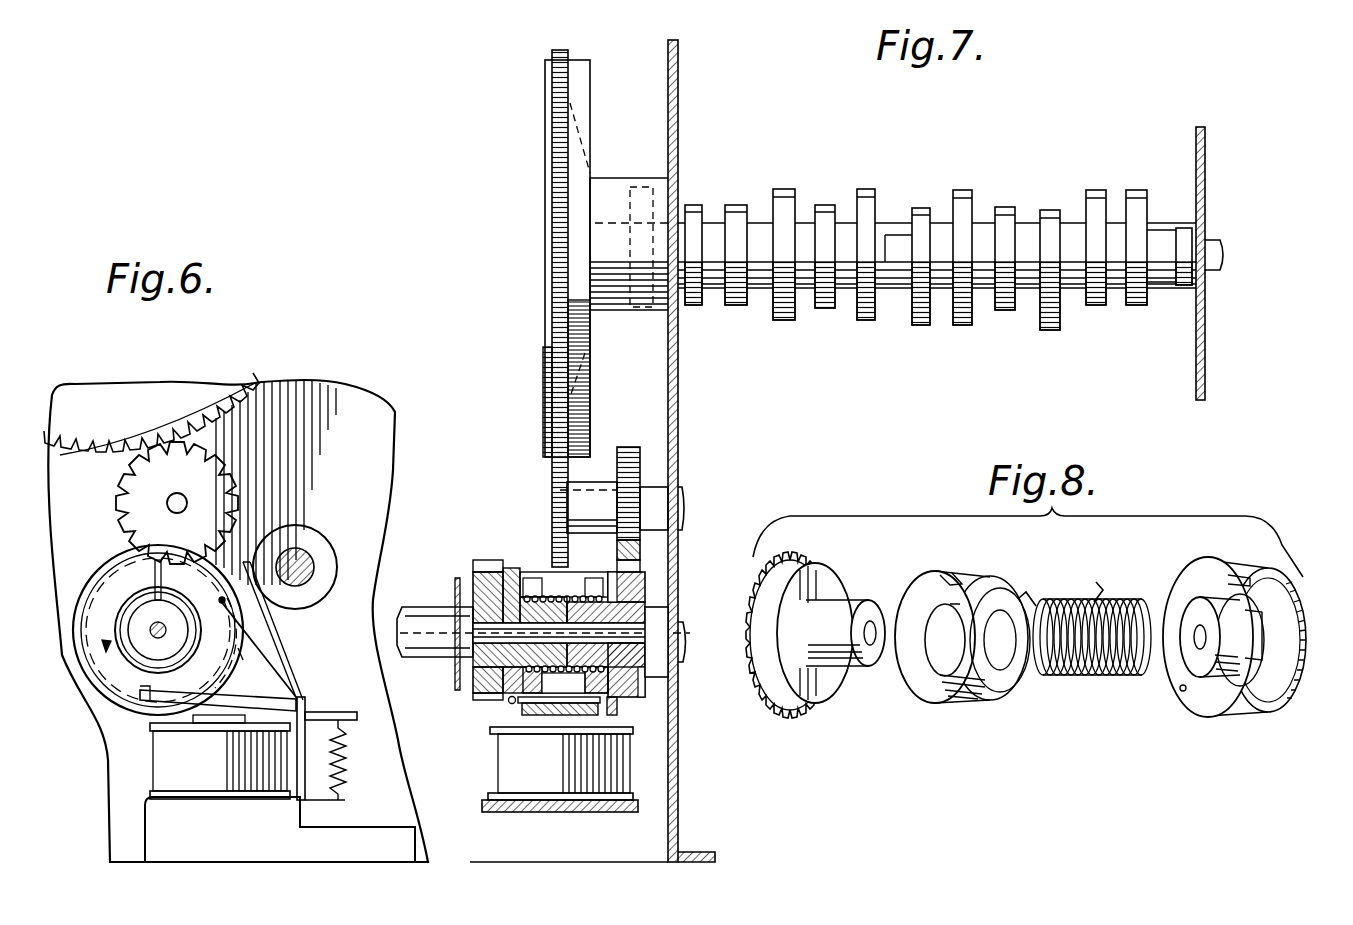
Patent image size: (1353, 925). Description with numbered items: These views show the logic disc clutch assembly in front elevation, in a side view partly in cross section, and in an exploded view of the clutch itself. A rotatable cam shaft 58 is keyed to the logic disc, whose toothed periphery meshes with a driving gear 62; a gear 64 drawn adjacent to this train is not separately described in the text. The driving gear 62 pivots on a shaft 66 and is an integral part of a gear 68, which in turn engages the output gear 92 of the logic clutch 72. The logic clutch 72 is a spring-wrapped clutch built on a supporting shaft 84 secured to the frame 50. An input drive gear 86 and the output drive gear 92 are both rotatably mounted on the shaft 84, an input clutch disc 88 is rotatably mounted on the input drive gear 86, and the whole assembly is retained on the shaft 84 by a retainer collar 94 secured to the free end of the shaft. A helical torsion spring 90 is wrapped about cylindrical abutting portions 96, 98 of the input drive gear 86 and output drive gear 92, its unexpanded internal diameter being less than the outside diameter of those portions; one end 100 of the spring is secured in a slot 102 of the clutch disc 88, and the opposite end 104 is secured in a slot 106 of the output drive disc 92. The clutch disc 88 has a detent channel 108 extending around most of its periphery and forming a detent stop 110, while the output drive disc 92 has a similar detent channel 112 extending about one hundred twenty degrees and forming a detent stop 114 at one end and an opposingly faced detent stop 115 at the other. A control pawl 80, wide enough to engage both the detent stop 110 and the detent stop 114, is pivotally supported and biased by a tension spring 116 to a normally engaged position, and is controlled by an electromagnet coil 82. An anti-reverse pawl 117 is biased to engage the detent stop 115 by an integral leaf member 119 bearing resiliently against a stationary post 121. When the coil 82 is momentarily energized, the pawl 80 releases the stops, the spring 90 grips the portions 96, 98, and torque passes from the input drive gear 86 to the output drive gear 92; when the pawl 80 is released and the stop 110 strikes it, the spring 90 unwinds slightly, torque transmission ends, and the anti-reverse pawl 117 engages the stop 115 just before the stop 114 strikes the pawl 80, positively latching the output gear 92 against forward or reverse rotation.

In FIG. 7, the frame 50 is at (680, 410).
In FIG. 7, the cam shaft 58 is at (708, 225).
In FIG. 6, the driving gear 62 is at (122, 516).
In FIG. 7, the driving gear 62 is at (552, 493).
In FIG. 6, the drive gear 64 is at (60, 480).
In FIG. 7, the drive gear 64 is at (550, 345).
In FIG. 6, the shaft 66 is at (175, 504).
In FIG. 7, the shaft 66 is at (600, 490).
In FIG. 7, the gear 68 is at (628, 447).
In FIG. 6, the logic clutch 72 is at (88, 672).
In FIG. 7, the logic clutch 72 is at (475, 605).
In FIG. 8, the logic clutch 72 is at (872, 678).
In FIG. 6, the control pawl 80 is at (215, 705).
In FIG. 7, the control pawl 80 is at (522, 715).
In FIG. 6, the electromagnet coil 82 is at (175, 770).
In FIG. 7, the electromagnet coil 82 is at (530, 775).
In FIG. 6, the supporting shaft 84 is at (150, 632).
In FIG. 7, the supporting shaft 84 is at (640, 632).
In FIG. 7, the input drive gear 86 is at (500, 665).
In FIG. 8, the input drive gear 86 is at (822, 580).
In FIG. 7, the input clutch disc 88 is at (512, 575).
In FIG. 8, the input clutch disc 88 is at (948, 698).
In FIG. 6, the helical torsion spring 90 is at (128, 660).
In FIG. 7, the helical torsion spring 90 is at (569, 598).
In FIG. 8, the helical torsion spring 90 is at (1068, 600).
In FIG. 6, the output drive gear 92 is at (240, 652).
In FIG. 7, the output drive gear 92 is at (628, 602).
In FIG. 8, the output drive gear 92 is at (1236, 712).
In FIG. 6, the retainer collar 94 is at (197, 395).
In FIG. 7, the retainer collar 94 is at (545, 237).
In FIG. 7, the cylindrical abutting portion 96 is at (520, 655).
In FIG. 8, the cylindrical abutting portion 96 is at (835, 608).
In FIG. 6, the cylindrical abutting portion 98 is at (150, 607).
In FIG. 7, the cylindrical abutting portion 98 is at (600, 655).
In FIG. 8, the cylindrical abutting portion 98 is at (1208, 680).
In FIG. 7, the spring end 100 is at (465, 590).
In FIG. 8, the spring end 100 is at (1024, 592).
In FIG. 7, the slot 102 is at (528, 578).
In FIG. 8, the slot 102 is at (938, 575).
In FIG. 6, the spring end 104 is at (153, 580).
In FIG. 7, the spring end 104 is at (620, 582).
In FIG. 8, the spring end 104 is at (1102, 592).
In FIG. 8, the slot 106 is at (1240, 576).
In FIG. 8, the detent channel 108 is at (1000, 590).
In FIG. 7, the detent stop 110 is at (510, 703).
In FIG. 8, the detent stop 110 is at (952, 573).
In FIG. 8, the detent channel 112 is at (1252, 705).
In FIG. 6, the detent stop 114 is at (143, 697).
In FIG. 7, the detent stop 114 is at (618, 710).
In FIG. 8, the detent stop 114 is at (1182, 692).
In FIG. 6, the detent stop 115 is at (236, 606).
In FIG. 8, the detent stop 115 is at (1262, 645).
In FIG. 6, the tension spring 116 is at (340, 786).
In FIG. 6, the anti-reverse pawl 117 is at (278, 672).
In FIG. 6, the leaf member 119 is at (270, 636).
In FIG. 6, the stationary post 121 is at (312, 540).